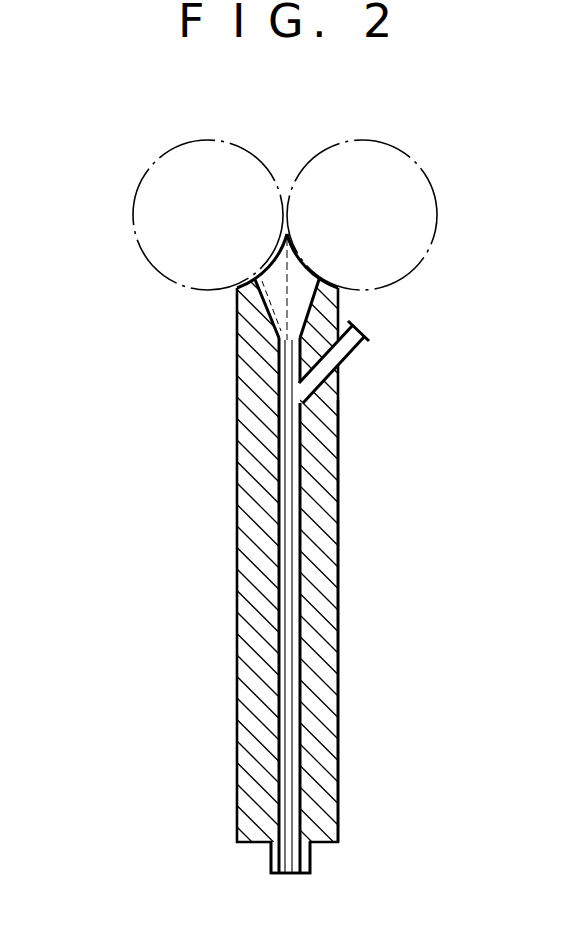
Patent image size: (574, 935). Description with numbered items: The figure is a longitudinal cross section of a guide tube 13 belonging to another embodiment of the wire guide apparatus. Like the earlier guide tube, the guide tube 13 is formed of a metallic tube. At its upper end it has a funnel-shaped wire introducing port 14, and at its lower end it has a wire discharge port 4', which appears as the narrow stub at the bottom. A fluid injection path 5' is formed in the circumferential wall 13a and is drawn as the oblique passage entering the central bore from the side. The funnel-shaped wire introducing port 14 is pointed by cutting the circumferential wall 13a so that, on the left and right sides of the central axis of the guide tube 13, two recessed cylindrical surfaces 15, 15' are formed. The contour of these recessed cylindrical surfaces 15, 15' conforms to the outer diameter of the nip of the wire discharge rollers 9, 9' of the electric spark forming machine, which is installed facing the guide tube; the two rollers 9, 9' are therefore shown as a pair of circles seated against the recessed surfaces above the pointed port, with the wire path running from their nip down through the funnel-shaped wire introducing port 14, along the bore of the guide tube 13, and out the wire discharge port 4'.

The wire discharge roller 9 is at (155, 194).
The wire discharge roller 9' is at (414, 201).
The guide tube 13 is at (227, 546).
The circumferential wall 13a is at (338, 490).
The funnel-shaped wire introducing port 14 is at (283, 287).
The recessed cylindrical surface 15 is at (191, 262).
The recessed cylindrical surface 15' is at (387, 261).
The fluid injection path 5' is at (362, 381).
The wire discharge port 4' is at (328, 882).